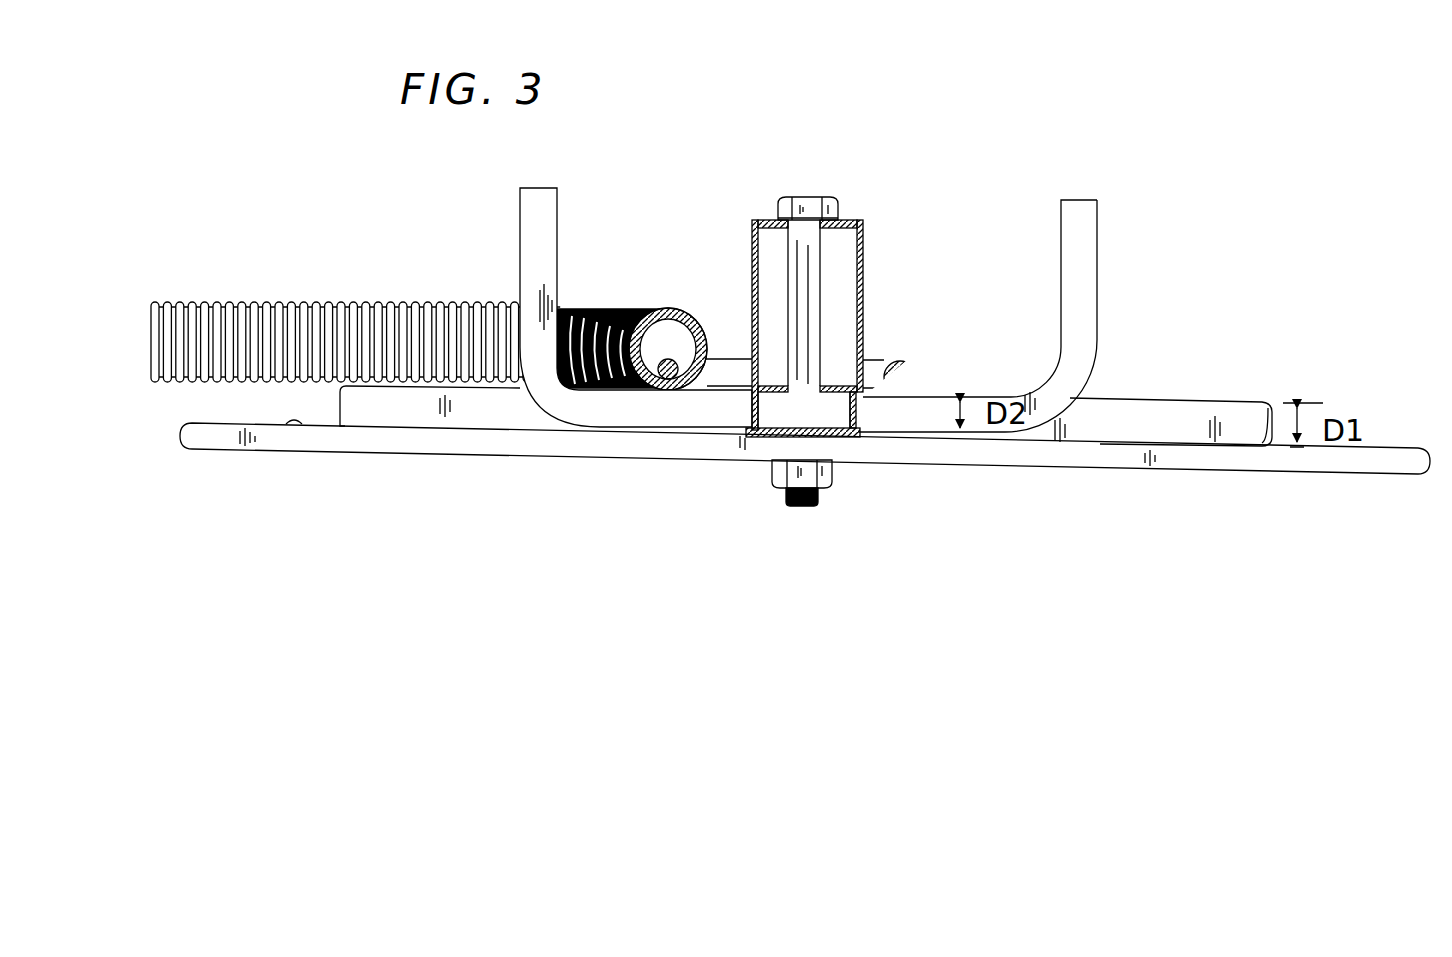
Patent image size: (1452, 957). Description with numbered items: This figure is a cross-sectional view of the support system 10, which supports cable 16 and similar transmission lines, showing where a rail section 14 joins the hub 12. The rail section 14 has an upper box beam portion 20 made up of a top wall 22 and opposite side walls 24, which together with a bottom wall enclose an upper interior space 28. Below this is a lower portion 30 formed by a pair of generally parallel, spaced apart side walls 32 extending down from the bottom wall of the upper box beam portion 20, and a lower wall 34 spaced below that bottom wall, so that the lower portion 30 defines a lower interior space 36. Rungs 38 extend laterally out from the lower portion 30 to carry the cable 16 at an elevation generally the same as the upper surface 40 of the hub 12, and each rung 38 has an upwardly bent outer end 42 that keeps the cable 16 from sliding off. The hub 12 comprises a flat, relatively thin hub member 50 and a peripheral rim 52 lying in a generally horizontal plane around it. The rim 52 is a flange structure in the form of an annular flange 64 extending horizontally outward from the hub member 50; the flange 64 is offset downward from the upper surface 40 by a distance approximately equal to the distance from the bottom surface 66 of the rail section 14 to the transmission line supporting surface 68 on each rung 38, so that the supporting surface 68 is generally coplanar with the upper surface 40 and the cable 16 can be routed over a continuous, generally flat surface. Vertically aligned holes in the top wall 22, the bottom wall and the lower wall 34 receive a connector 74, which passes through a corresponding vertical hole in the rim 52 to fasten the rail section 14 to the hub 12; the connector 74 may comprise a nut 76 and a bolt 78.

The support system 10 is at (1122, 201).
The hub 12 is at (183, 462).
The rail section 14 is at (788, 346).
The cable 16 is at (578, 310).
The upper box beam portion 20 is at (874, 247).
The top wall 22 is at (768, 222).
The side walls 24 is at (752, 268).
The upper interior space 28 is at (848, 296).
The lower portion 30 is at (867, 436).
The side walls 32 is at (750, 402).
The lower wall 34 is at (775, 460).
The lower interior space 36 is at (768, 446).
The rungs 38 is at (607, 405).
The upper surface 40 is at (1200, 400).
The upwardly bent outer end 42 is at (558, 262).
The hub member 50 is at (1270, 404).
The rim 52 is at (1392, 448).
The annular flange 64 is at (292, 425).
The bottom surface 66 is at (765, 440).
The transmission line supporting surface 68 is at (720, 392).
The connector 74 is at (778, 208).
The nut 76 is at (833, 474).
The bolt 78 is at (828, 197).